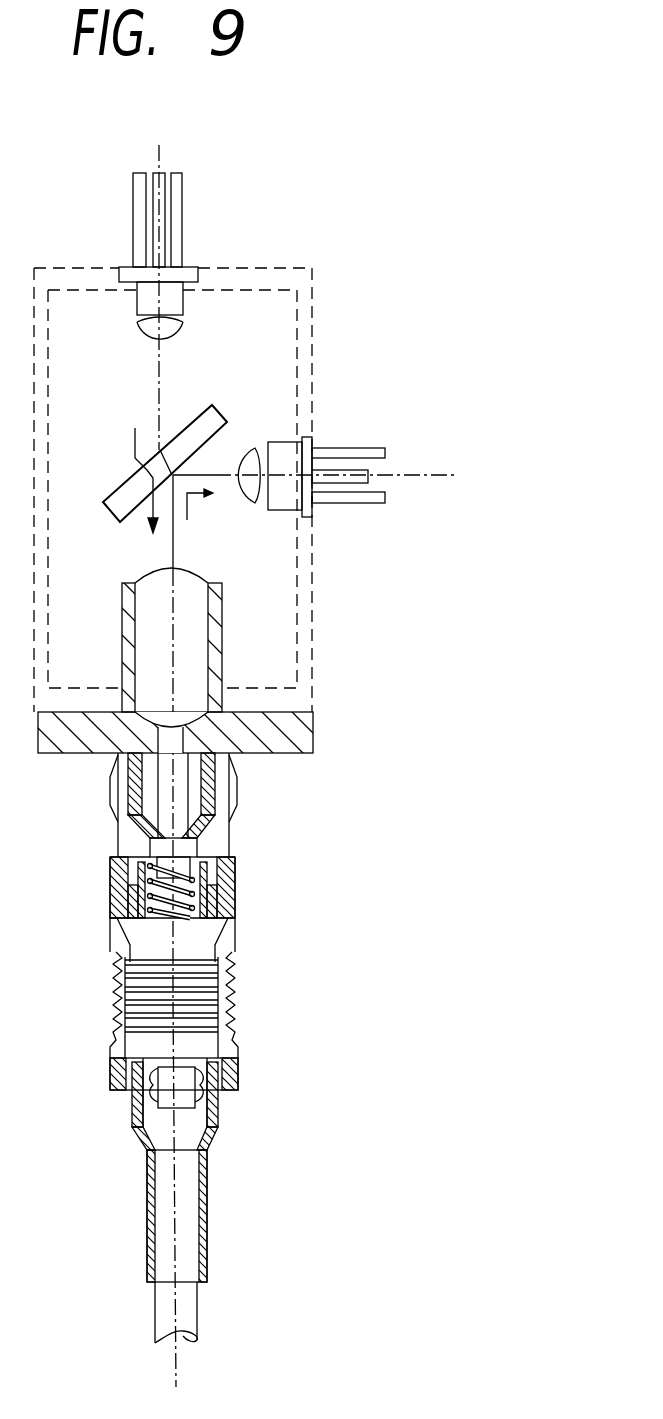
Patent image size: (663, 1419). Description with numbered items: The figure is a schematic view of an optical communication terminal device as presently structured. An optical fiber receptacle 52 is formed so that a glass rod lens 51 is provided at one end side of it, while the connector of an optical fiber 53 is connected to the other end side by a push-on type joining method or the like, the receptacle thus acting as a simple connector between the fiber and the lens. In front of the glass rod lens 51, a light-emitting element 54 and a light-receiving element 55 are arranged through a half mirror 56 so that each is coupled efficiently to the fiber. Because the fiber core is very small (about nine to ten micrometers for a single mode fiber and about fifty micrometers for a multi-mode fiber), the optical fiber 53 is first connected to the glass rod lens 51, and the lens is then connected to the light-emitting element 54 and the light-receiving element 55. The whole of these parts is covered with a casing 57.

The glass rod lens 51 is at (197, 584).
The optical fiber receptacle 52 is at (303, 734).
The optical fiber 53 is at (229, 872).
The light-emitting element 54 is at (197, 215).
The light-receiving element 55 is at (394, 433).
The half mirror 56 is at (217, 420).
The casing 57 is at (284, 290).